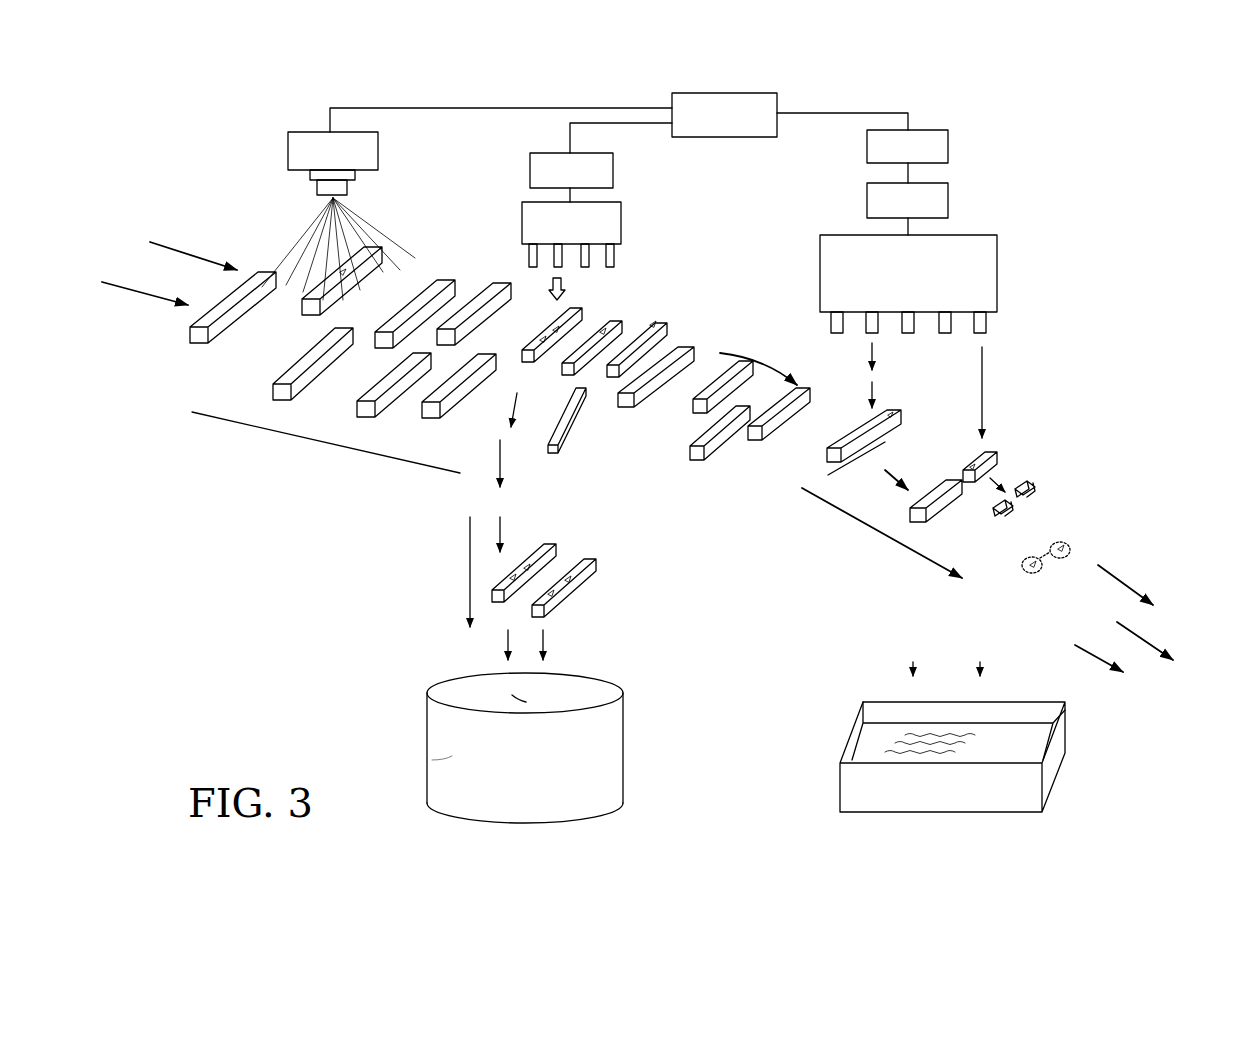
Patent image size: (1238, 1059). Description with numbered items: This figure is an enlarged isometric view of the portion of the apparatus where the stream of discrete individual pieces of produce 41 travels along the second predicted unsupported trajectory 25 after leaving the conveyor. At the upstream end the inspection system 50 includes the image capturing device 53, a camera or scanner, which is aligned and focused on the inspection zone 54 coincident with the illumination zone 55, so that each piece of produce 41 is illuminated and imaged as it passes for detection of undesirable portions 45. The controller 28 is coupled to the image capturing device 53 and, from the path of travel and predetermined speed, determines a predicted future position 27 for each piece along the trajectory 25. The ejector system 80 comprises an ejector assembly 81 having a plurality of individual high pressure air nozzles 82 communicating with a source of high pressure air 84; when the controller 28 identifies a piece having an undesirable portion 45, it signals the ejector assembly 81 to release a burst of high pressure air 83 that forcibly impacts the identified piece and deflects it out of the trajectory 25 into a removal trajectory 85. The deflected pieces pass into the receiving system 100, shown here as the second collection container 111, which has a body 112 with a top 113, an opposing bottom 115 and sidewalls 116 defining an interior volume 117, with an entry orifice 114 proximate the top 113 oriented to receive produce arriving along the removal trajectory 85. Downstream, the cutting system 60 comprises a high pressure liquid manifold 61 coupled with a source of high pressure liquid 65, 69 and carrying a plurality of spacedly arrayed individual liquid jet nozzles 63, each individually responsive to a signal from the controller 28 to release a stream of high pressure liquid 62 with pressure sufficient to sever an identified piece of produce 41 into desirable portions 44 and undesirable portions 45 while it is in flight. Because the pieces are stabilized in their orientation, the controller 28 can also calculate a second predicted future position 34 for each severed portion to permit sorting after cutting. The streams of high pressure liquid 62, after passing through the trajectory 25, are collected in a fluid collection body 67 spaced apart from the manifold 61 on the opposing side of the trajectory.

The controller 28 is at (714, 125).
The image capturing device 53 is at (323, 161).
The inspection system 50 is at (358, 213).
The source of high pressure air 84 is at (561, 181).
The ejector assembly 81 is at (561, 233).
The ejector system 80 is at (587, 226).
The individual high pressure air nozzles 82 is at (527, 258).
The burst of high pressure air 83 is at (566, 288).
The source of high pressure liquid 65 is at (897, 156).
The source of high pressure liquid 69 is at (897, 210).
The cutting system 60 is at (922, 250).
The high pressure liquid manifold 61 is at (898, 284).
The stream of high pressure liquid 62 is at (876, 355).
The individual liquid jet nozzles 63 is at (836, 334).
The second predicted unsupported trajectory 25 is at (187, 248).
The discrete individual pieces of produce 41 is at (232, 326).
The undesirable portions 45 is at (333, 284).
The predicted future position 27 is at (856, 449).
The desirable portions 44 is at (870, 458).
The second predicted future position 34 is at (1058, 570).
The inspection zone 54 is at (286, 432).
The illumination zone 55 is at (326, 442).
The removal trajectory 85 is at (515, 410).
The receiving system 100 is at (547, 749).
The second collection container 111 is at (531, 749).
The body 112 is at (440, 748).
The top 113 is at (437, 688).
The entry orifice 114 is at (600, 682).
The bottom 115 is at (598, 810).
The sidewalls 116 is at (608, 752).
The interior volume 117 is at (520, 694).
The fluid collection body 67 is at (929, 796).